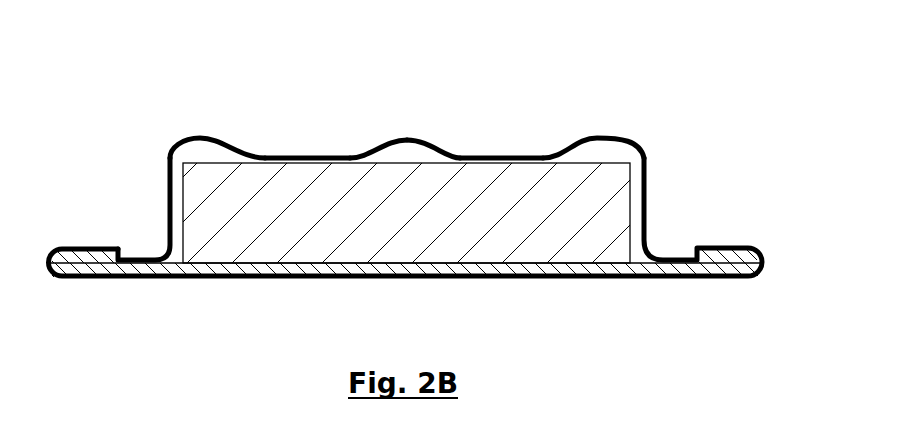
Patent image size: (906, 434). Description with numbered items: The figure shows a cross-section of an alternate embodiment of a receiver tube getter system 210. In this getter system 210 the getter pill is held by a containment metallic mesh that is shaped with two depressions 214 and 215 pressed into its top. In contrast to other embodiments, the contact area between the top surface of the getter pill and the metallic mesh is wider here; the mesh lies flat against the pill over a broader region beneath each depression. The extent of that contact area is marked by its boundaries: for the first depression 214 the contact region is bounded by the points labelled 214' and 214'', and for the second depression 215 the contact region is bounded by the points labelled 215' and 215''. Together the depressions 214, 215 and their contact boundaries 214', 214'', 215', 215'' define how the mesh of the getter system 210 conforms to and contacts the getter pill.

The getter system 210 is at (430, 145).
The depression 214 is at (312, 86).
The boundary of contact area 214' is at (184, 109).
The boundary of contact area 214'' is at (369, 120).
The depression 215 is at (505, 87).
The boundary of contact area 215' is at (441, 124).
The boundary of contact area 215'' is at (605, 108).